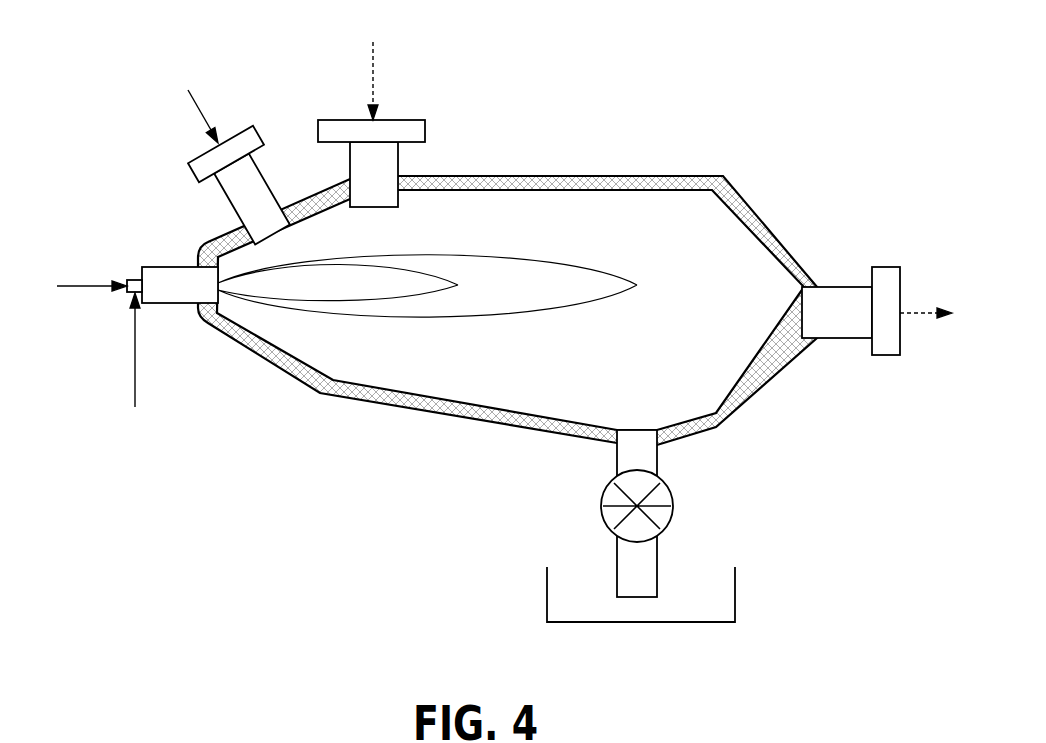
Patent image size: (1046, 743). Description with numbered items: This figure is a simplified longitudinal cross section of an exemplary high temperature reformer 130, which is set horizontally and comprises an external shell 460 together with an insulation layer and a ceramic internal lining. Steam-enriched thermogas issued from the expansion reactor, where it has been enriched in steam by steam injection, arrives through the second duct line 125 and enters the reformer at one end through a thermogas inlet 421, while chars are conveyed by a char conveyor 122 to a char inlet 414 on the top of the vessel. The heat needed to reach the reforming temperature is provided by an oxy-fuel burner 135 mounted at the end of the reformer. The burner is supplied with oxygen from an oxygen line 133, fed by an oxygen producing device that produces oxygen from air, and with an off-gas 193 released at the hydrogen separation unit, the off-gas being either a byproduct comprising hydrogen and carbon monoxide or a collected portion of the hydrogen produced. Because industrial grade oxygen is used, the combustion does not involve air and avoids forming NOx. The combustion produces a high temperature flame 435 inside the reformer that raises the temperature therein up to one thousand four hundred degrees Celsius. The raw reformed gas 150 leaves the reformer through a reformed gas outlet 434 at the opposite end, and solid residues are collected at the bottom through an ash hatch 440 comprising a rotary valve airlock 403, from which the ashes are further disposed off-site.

The high temperature reformer 130 is at (501, 327).
The external shell 460 is at (523, 177).
The thermogas inlet 421 is at (235, 211).
The char inlet 414 is at (398, 166).
The reformed gas outlet 434 is at (838, 287).
The ash hatch 440 is at (616, 457).
The rotary valve airlock 403 is at (672, 489).
The oxy-fuel burner 135 is at (172, 285).
The high temperature flame 435 is at (425, 308).
The char conveyor 122 is at (374, 63).
The second duct line 125 is at (197, 107).
The oxygen line 133 is at (92, 284).
The off-gas 193 is at (135, 371).
The raw reformed gas 150 is at (917, 308).